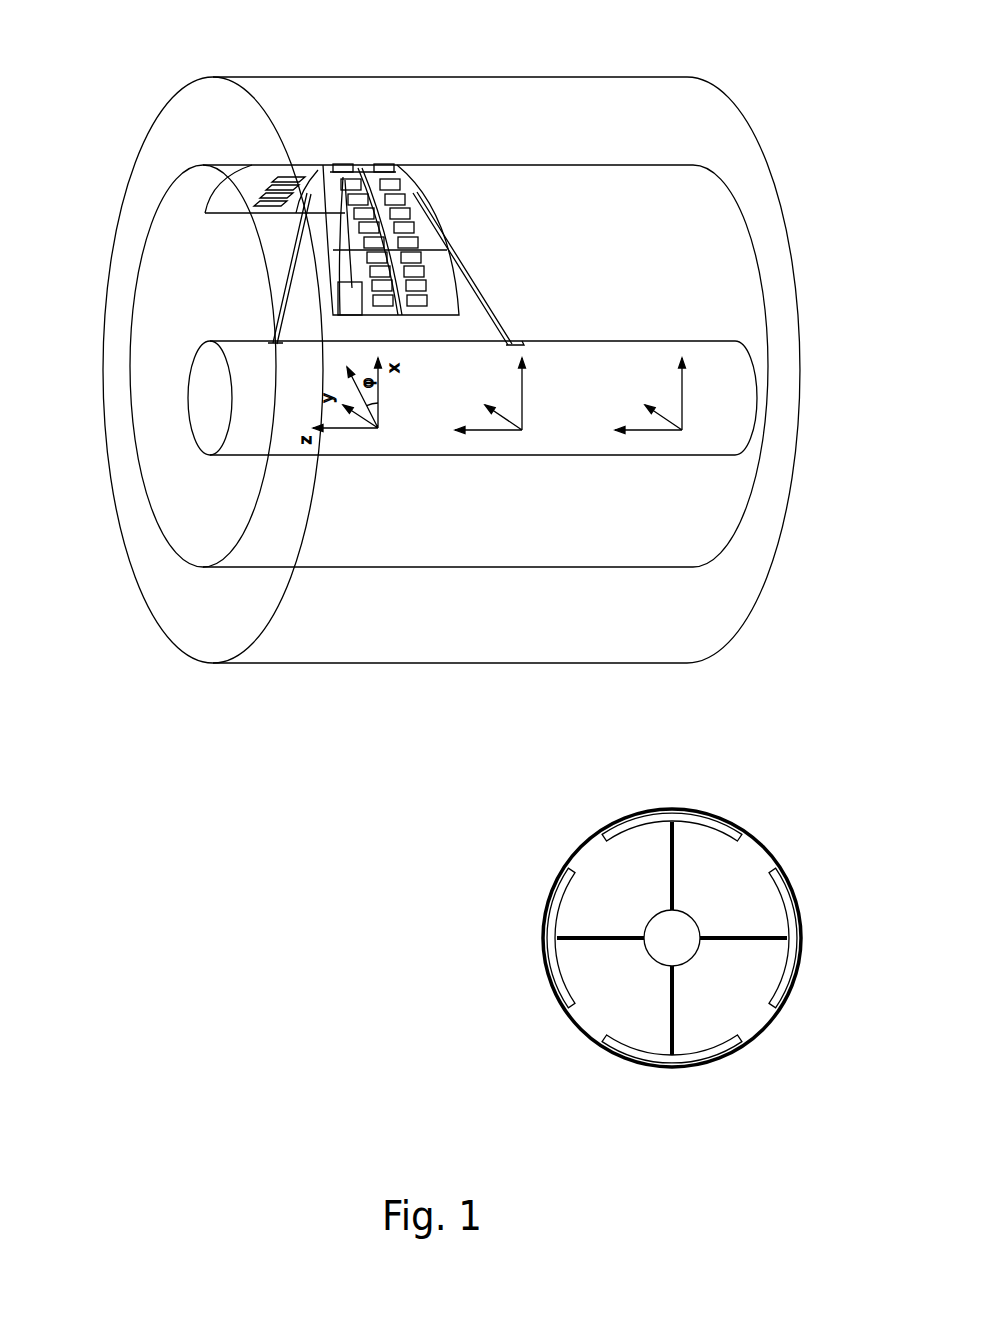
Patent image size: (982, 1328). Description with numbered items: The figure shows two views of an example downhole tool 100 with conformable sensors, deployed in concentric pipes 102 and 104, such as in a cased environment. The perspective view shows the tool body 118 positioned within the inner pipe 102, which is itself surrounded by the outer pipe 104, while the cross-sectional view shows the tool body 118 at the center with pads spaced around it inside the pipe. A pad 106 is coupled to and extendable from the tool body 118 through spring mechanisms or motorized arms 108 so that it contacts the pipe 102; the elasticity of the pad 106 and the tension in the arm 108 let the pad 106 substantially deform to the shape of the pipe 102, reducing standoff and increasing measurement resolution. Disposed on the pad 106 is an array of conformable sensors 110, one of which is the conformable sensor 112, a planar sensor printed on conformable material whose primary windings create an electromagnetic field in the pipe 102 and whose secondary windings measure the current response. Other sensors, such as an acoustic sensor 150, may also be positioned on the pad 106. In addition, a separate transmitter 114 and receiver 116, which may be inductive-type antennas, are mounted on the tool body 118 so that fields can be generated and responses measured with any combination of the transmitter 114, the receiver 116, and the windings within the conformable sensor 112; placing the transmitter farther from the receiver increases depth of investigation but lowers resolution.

The downhole tool 100 is at (203, 457).
The pipe 102 is at (133, 290).
The pipe 104 is at (782, 205).
The pad 106 is at (345, 163).
The spring mechanisms or motorized arms 108 is at (288, 302).
The array of conformable sensors 110 is at (372, 152).
The conformable sensor 112 is at (385, 300).
The transmitter 114 is at (480, 443).
The receiver 116 is at (643, 445).
The tool body 118 is at (187, 413).
The acoustic sensor 150 is at (320, 178).